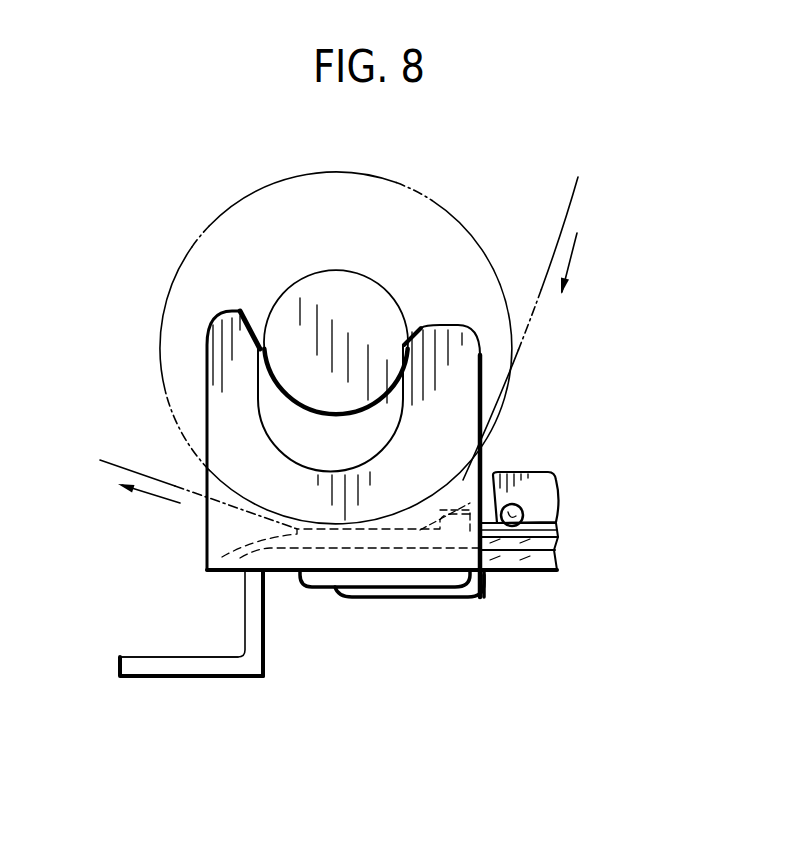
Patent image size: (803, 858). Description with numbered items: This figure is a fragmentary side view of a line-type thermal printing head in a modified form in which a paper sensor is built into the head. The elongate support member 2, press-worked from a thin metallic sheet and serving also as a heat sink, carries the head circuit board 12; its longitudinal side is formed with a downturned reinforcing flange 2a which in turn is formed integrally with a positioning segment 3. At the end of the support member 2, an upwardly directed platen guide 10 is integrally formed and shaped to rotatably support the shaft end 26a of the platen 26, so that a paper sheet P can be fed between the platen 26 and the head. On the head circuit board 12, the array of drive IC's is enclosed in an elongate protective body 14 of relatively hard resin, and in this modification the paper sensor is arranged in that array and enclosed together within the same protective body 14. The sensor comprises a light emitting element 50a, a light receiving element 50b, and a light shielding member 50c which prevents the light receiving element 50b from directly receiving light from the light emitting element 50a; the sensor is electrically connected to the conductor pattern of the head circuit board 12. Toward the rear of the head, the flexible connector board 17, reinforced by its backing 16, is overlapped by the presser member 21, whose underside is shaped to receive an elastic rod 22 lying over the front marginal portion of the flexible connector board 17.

The paper sheet path P is at (556, 243).
The platen 26 is at (235, 238).
The shaft ends 26a is at (285, 318).
The platen guides 10 is at (213, 408).
The head circuit board 12 is at (235, 545).
The elongate protective body 14 is at (410, 533).
The support member 2 is at (522, 562).
The reinforcing flange 2a is at (252, 614).
The positioning segment 3 is at (141, 672).
The light emitting element 50a is at (440, 560).
The light receiving element 50b is at (409, 639).
The light shielding member 50c is at (503, 572).
The presser member 21 is at (558, 479).
The elastic rod 22 is at (513, 512).
The flexible connector board 17 is at (560, 508).
The backing 16 is at (532, 542).